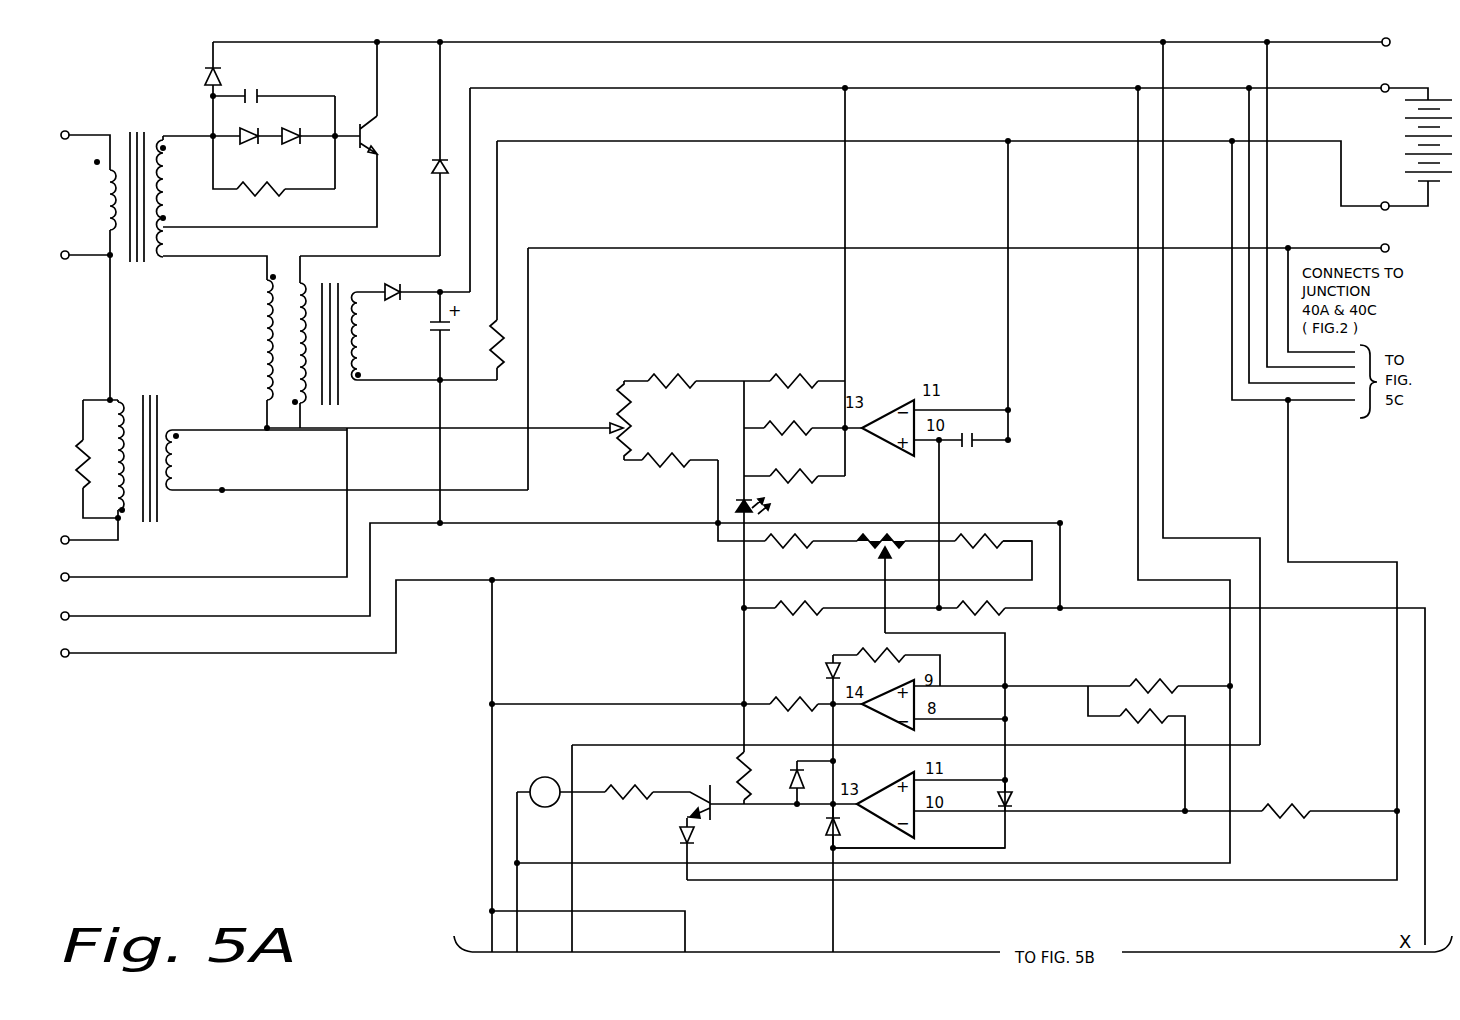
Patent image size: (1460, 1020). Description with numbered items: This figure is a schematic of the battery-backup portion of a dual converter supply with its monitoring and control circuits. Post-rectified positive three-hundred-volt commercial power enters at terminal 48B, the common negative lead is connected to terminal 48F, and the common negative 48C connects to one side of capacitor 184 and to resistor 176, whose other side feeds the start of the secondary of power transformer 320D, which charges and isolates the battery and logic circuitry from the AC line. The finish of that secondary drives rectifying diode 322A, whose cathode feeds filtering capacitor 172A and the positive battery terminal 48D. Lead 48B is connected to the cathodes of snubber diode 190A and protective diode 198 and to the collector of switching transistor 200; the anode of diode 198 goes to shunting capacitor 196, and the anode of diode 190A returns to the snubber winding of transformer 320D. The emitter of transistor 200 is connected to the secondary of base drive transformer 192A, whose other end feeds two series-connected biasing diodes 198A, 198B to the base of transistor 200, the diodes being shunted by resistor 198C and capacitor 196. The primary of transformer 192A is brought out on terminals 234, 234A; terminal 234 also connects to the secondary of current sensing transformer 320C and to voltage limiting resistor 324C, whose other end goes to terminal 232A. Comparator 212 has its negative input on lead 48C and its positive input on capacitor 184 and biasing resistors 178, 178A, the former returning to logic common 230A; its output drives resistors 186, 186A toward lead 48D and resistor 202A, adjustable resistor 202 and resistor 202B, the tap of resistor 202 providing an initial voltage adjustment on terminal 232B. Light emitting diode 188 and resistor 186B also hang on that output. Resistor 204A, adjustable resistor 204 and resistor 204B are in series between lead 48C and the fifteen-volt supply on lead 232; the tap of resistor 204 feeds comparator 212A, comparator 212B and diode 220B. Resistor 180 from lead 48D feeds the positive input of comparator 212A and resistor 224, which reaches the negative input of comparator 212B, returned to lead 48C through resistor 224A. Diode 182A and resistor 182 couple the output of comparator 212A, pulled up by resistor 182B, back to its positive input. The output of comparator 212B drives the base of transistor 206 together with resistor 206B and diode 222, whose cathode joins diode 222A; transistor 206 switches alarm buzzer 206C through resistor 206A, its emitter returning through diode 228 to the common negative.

The protective diode 198 is at (206, 72).
The shunting capacitor 196 is at (272, 72).
The diode 198A is at (243, 143).
The diode 198B is at (310, 114).
The resistor 198C is at (272, 190).
The battery charger switching transistor 200 is at (370, 128).
The snubber diode 190A is at (432, 166).
The terminal 234A is at (63, 130).
The base drive transformer 192A is at (126, 148).
The terminal 234 is at (67, 262).
The rectifying diode 322A is at (394, 300).
The filtering capacitor 172A is at (428, 340).
The power transformer 320D is at (336, 396).
The resistor 176 is at (500, 368).
The adjustable resistor 202 is at (614, 408).
The resistor 202A is at (660, 376).
The resistor 202B is at (688, 458).
The resistor 186A is at (820, 362).
The resistor 186 is at (804, 424).
The resistor 186B is at (791, 461).
The comparator 212 is at (900, 376).
The capacitor 184 is at (960, 446).
The light emitting diode 188 is at (734, 502).
The adjustable resistor 204 is at (892, 508).
The resistor 204A is at (776, 546).
The resistor 204B is at (964, 546).
The biasing resistor 178A is at (800, 600).
The biasing resistor 178 is at (984, 600).
The resistor 182 is at (870, 652).
The diode 182A is at (822, 660).
The resistor 182B is at (812, 698).
The resistor 180 is at (1136, 680).
The comparator 212A is at (918, 732).
The resistor 224 is at (1108, 718).
The alarm buzzer 206C is at (552, 778).
The resistor 206A is at (640, 784).
The resistor 206B is at (722, 770).
The transistor 206 is at (690, 808).
The diode 228 is at (678, 834).
The diode 222 is at (790, 778).
The diode 222A is at (822, 826).
The comparator 212B is at (916, 830).
The diode 220B is at (1012, 798).
The resistor 224A is at (1310, 792).
The voltage limiting resistor 324C is at (82, 440).
The current sensing transformer 320C is at (160, 506).
The terminal 232A is at (66, 546).
The output terminal 232B is at (66, 583).
The logic common lead 230A is at (66, 622).
The lead 232 is at (66, 659).
The positive power terminal 48B is at (1388, 47).
The positive battery terminal 48D is at (1388, 84).
The common negative lead 48C is at (1392, 200).
The negative supply terminal 48F is at (1388, 244).